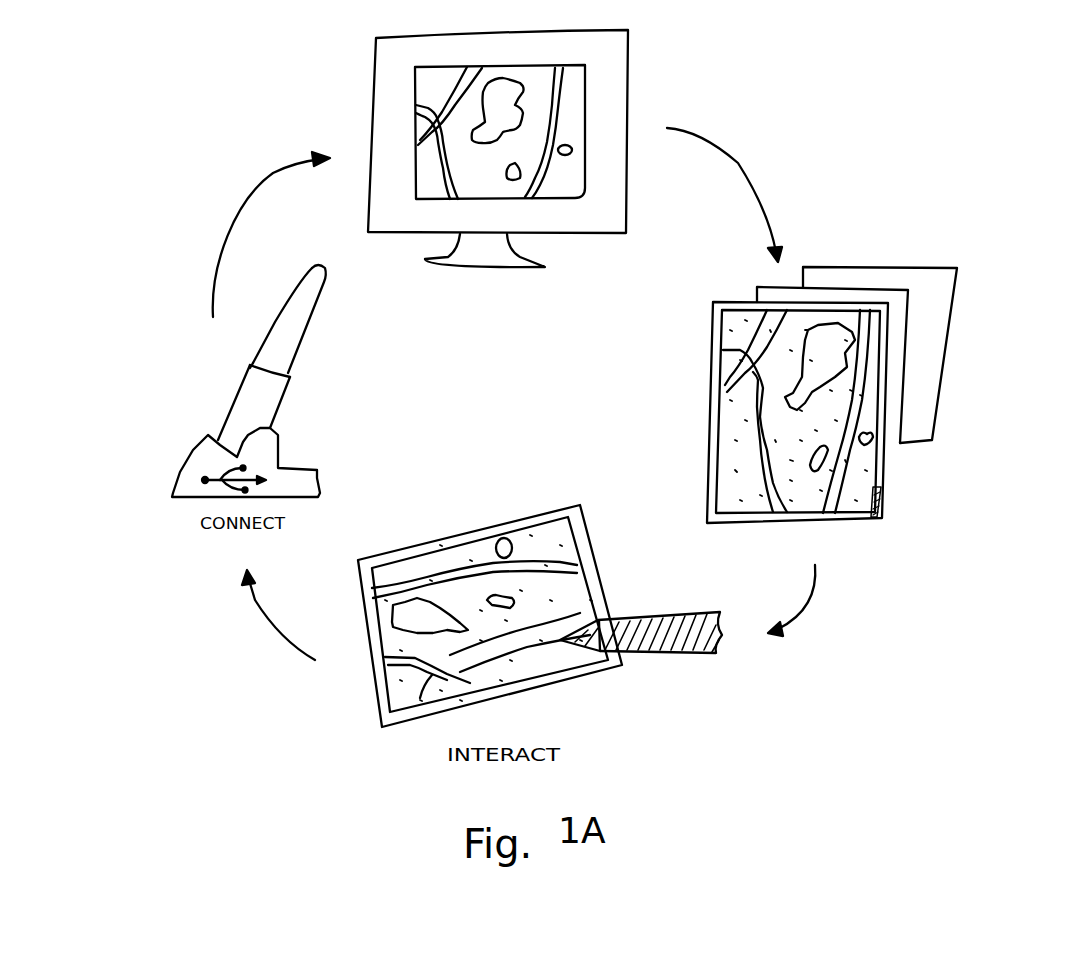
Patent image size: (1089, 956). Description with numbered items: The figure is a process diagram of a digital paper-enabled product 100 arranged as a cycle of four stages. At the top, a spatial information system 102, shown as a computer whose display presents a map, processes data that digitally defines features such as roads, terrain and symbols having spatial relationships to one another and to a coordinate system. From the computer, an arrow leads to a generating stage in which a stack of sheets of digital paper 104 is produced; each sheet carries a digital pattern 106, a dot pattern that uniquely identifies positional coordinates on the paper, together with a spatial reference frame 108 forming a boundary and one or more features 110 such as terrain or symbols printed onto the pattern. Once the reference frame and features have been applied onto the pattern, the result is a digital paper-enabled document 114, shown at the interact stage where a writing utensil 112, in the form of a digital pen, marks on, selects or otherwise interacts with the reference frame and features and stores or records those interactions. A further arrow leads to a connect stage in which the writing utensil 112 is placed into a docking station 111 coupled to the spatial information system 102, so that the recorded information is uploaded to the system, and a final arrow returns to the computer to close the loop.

The digital paper-enabled product 100 is at (338, 707).
The spatial information system 102 is at (630, 50).
The digital paper 104 is at (957, 270).
The digital pattern 106 is at (793, 330).
The spatial reference frame 108 is at (815, 310).
The feature 110 is at (873, 483).
The docking station 111 is at (283, 403).
The writing utensil 112 is at (652, 610).
The digital paper-enabled document 114 is at (555, 472).